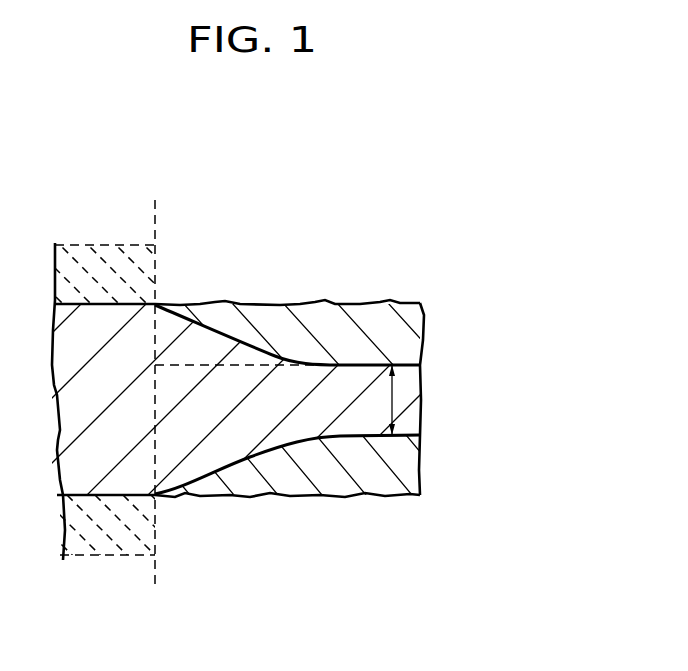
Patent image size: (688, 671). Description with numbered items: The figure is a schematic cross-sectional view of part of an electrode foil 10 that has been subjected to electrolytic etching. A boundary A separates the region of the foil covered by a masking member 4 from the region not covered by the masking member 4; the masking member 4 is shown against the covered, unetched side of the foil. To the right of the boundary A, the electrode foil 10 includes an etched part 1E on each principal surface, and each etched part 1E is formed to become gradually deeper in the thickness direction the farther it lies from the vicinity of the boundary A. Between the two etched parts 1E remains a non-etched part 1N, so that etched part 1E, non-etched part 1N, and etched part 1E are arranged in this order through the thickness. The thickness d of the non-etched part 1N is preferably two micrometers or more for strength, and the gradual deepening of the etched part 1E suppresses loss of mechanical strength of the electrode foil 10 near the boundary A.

The electrode foil 10 is at (334, 196).
The etched part 1E is at (364, 323).
The non-etched part 1N is at (398, 397).
The thickness of non-etched part d is at (393, 387).
The boundary A is at (156, 201).
The masking member 4 is at (82, 250).